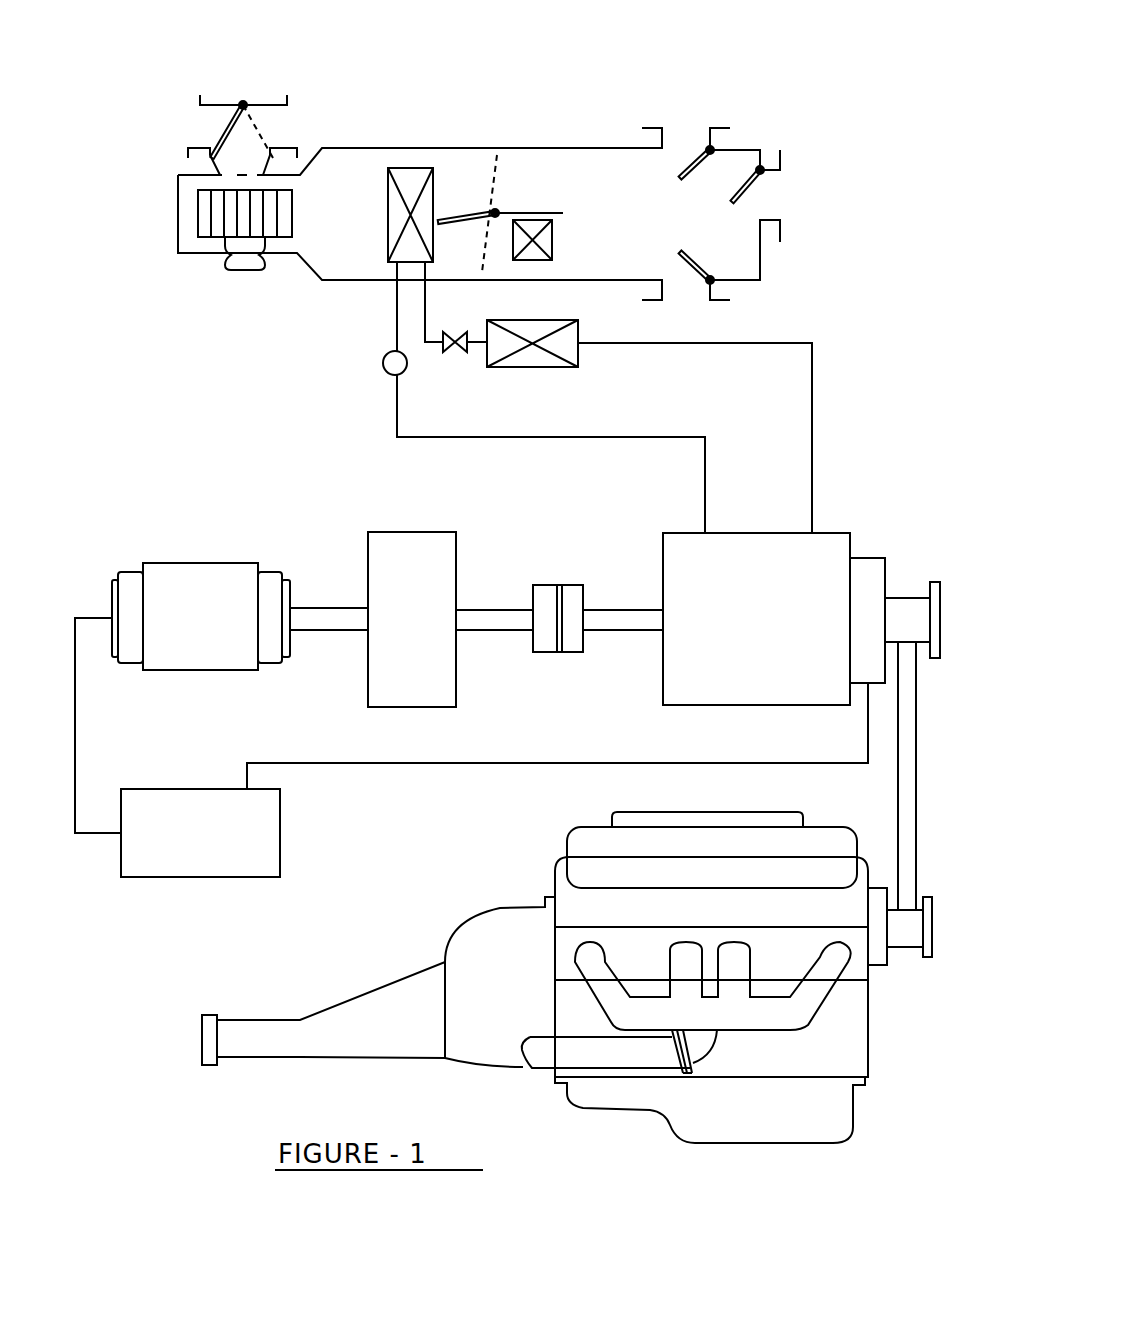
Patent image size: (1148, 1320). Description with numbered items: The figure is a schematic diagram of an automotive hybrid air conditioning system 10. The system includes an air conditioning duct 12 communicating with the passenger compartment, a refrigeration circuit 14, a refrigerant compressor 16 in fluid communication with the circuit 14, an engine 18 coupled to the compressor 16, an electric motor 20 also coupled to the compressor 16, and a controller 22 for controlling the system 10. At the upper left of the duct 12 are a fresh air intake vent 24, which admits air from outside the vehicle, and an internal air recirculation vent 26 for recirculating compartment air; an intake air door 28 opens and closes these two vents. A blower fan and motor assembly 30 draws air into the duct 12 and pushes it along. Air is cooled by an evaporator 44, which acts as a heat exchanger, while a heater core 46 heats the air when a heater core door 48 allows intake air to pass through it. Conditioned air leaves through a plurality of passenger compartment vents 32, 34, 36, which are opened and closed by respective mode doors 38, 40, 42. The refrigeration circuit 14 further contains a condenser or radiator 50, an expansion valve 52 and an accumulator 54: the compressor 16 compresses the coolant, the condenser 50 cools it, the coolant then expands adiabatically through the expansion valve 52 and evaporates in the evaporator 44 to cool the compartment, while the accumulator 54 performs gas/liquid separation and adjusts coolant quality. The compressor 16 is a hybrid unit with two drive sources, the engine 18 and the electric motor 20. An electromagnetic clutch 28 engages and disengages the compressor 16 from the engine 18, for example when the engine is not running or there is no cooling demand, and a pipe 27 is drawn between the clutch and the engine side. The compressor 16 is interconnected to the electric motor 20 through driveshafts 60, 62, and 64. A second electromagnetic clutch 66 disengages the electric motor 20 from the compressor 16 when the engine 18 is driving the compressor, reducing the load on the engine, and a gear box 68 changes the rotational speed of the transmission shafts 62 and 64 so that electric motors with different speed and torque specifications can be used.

The automotive hybrid air conditioning system 10 is at (208, 474).
The air conditioning duct 12 is at (570, 38).
The refrigeration circuit 14 is at (820, 422).
The refrigerant compressor 16 is at (742, 690).
The engine 18 is at (857, 1028).
The electric motor 20 is at (195, 660).
The controller 22 is at (210, 865).
The fresh air intake vent 24 is at (200, 133).
The internal air recirculation vent 26 is at (282, 123).
The coolant pipe 27 is at (907, 613).
The intake air door 28 is at (213, 118).
The blower fan and motor assembly 30 is at (220, 237).
The passenger compartment vent 32 is at (687, 127).
The passenger compartment vent 34 is at (782, 193).
The passenger compartment vent 36 is at (682, 283).
The mode door 38 is at (703, 170).
The mode door 40 is at (742, 188).
The mode door 42 is at (693, 255).
The evaporator 44 is at (390, 220).
The heater core 46 is at (547, 240).
The heater core door 48 is at (460, 215).
The condenser 50 is at (532, 355).
The expansion valve 52 is at (467, 347).
The accumulator 54 is at (383, 363).
The driveshaft 60 is at (618, 620).
The driveshaft 62 is at (490, 622).
The driveshaft 64 is at (327, 617).
The second electromagnetic clutch 66 is at (572, 643).
The gear box 68 is at (415, 692).